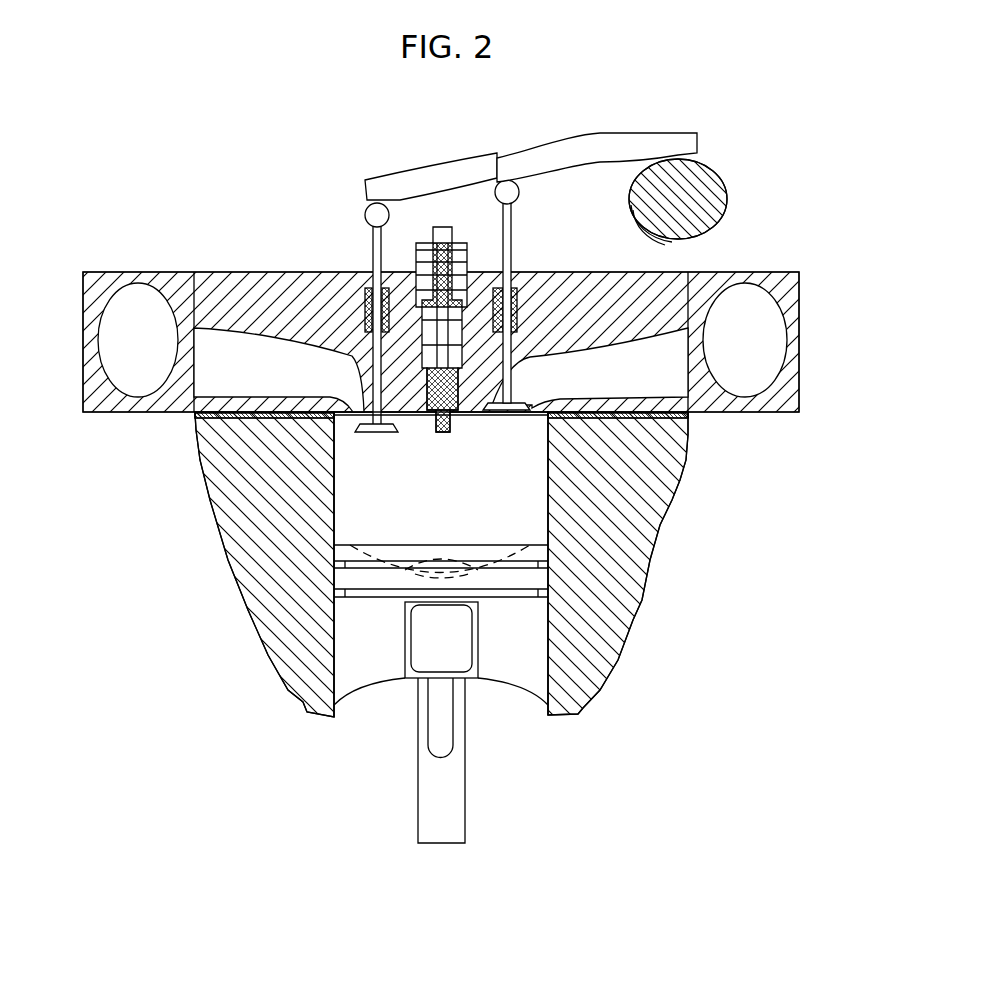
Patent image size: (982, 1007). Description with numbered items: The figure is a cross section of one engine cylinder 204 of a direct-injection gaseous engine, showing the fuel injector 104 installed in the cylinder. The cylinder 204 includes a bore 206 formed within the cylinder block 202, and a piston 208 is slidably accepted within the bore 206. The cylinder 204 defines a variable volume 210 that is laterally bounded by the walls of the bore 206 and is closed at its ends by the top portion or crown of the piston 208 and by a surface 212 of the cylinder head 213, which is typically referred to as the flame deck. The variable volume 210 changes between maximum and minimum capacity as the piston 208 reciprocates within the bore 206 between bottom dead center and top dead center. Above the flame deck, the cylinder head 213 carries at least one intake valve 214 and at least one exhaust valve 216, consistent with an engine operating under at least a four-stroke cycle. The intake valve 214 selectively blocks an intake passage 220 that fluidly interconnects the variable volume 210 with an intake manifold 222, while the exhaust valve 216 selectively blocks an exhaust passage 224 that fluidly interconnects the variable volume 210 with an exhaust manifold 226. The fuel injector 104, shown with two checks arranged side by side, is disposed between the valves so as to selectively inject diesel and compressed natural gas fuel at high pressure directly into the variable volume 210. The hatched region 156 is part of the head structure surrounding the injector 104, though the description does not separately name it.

The fuel injector 104 is at (461, 215).
The cylinder head 156 is at (550, 280).
The cylinder block 202 is at (640, 514).
The engine cylinder 204 is at (218, 637).
The bore 206 is at (542, 483).
The piston 208 is at (517, 663).
The variable volume 210 is at (395, 527).
The surface of the cylinder head 212 is at (413, 425).
The cylinder head 213 is at (630, 290).
The intake valve 214 is at (363, 410).
The exhaust valve 216 is at (516, 395).
The intake passage 220 is at (217, 350).
The intake manifold 222 is at (123, 315).
The exhaust passage 224 is at (665, 390).
The exhaust manifold 226 is at (750, 324).